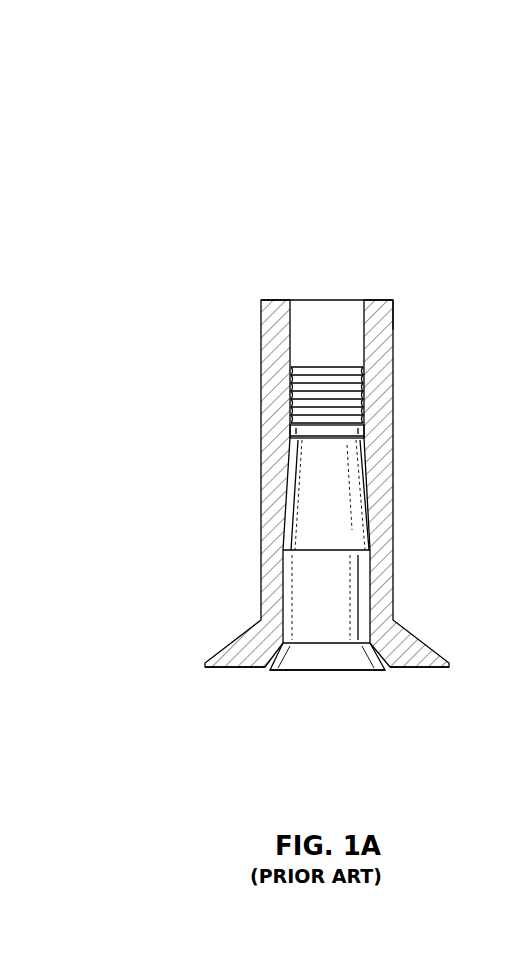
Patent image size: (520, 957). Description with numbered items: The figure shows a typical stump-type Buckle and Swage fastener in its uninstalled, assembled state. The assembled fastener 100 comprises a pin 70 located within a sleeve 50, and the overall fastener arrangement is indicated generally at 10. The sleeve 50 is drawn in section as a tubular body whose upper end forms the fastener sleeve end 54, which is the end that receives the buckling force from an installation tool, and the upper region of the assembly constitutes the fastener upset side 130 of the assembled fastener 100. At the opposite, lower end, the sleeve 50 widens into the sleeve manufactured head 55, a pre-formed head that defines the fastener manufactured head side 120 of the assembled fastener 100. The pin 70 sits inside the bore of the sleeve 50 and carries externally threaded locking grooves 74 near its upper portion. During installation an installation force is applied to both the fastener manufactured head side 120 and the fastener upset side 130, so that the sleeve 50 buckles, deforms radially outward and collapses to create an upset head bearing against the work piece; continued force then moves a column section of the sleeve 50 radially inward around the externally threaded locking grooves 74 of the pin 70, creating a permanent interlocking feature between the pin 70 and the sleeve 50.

The pipette tip assembly 10 is at (513, 114).
The assembled fastener 100 is at (197, 298).
The sleeve 50 is at (346, 483).
The fastener sleeve end 54 is at (272, 300).
The fastener upset side 130 is at (378, 300).
The externally threaded locking grooves 74 is at (308, 409).
The pin 70 is at (348, 503).
The sleeve manufactured head 55 is at (243, 666).
The fastener manufactured head side 120 is at (335, 672).